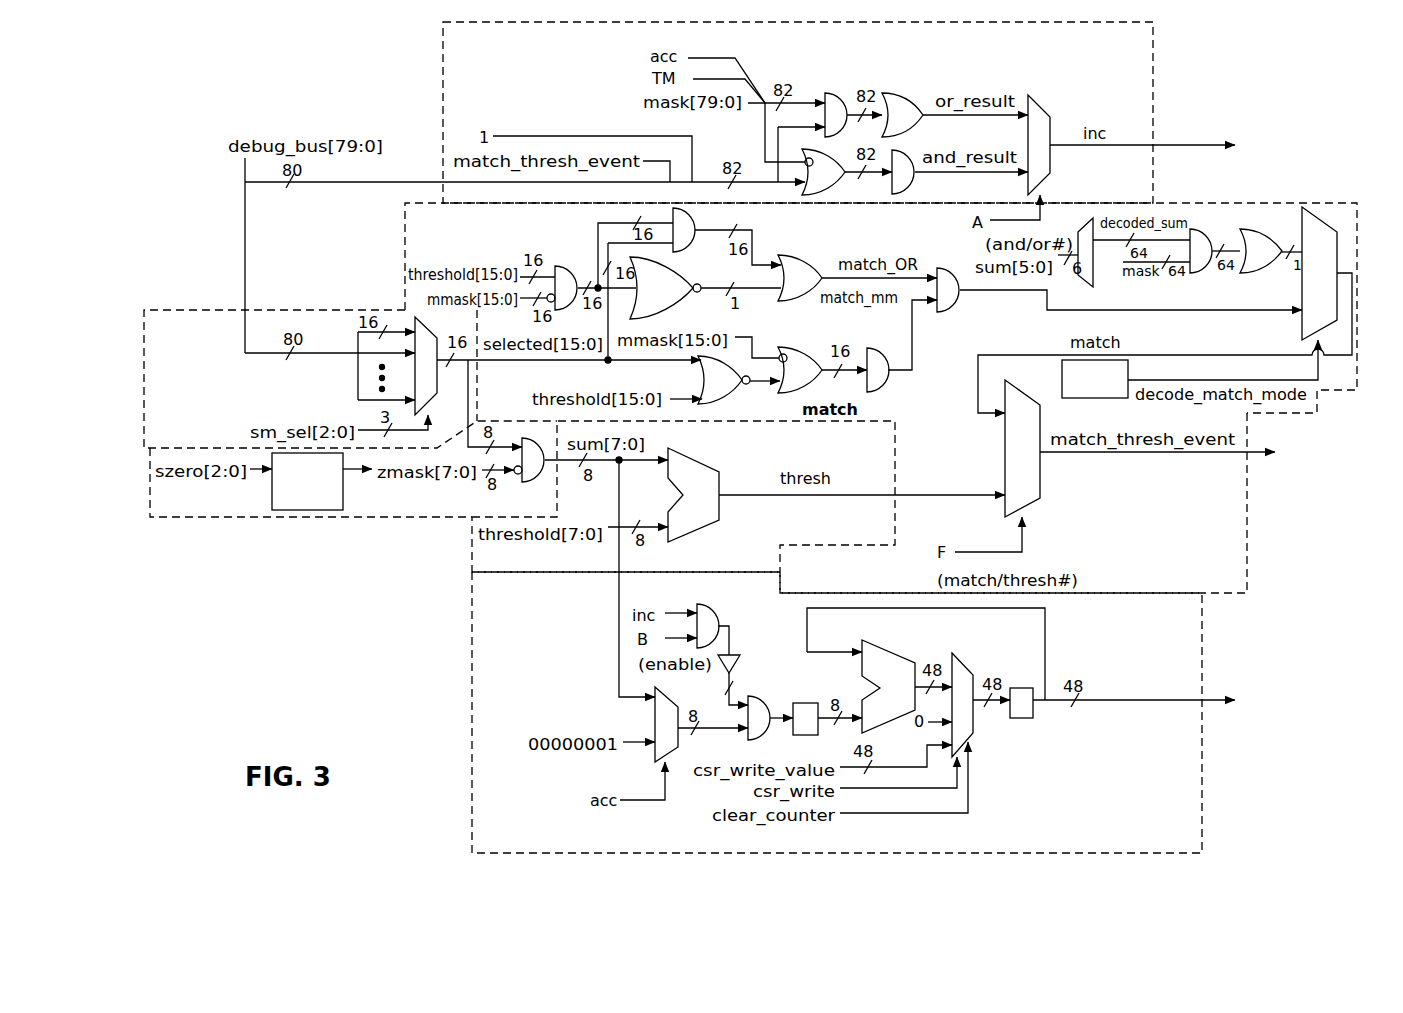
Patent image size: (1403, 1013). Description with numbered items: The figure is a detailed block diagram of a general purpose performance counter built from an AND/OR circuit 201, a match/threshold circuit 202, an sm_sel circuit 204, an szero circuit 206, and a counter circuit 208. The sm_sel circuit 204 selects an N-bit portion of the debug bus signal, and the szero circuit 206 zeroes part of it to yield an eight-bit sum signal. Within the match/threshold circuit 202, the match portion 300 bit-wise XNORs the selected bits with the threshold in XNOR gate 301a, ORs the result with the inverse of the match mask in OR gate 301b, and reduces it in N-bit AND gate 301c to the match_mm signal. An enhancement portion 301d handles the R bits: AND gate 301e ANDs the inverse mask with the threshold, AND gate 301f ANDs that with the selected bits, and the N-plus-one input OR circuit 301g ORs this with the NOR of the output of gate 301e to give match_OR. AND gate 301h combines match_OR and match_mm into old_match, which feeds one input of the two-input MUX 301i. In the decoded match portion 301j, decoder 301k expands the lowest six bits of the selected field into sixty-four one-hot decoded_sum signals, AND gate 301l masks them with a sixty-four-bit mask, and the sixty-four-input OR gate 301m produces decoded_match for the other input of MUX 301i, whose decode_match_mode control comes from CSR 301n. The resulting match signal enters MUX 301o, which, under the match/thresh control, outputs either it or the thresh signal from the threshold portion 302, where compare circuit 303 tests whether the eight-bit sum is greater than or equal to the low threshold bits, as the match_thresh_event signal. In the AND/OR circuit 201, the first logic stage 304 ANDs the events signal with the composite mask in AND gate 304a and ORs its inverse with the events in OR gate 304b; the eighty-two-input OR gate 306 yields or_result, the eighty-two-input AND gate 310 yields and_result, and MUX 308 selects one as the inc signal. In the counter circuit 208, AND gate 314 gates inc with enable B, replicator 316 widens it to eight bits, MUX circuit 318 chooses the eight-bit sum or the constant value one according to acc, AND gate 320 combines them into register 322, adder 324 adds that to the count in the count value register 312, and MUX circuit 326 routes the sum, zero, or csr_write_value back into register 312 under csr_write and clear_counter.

The AND/OR circuit 201 is at (1156, 108).
The match/threshold circuit 202 is at (1283, 565).
The sm_sel circuit 204 is at (223, 306).
The szero circuit 206 is at (263, 516).
The counter circuit 208 is at (1203, 754).
The match portion 300 is at (1163, 205).
The XNOR gate 301a is at (726, 401).
The OR gate 301b is at (802, 347).
The N-bit AND gate 301c is at (881, 387).
The enhancement portion 301d is at (943, 324).
The AND gate 301e is at (555, 267).
The AND gate 301f is at (700, 228).
The N+1 input OR circuit 301g is at (800, 257).
The AND gate 301h is at (947, 235).
The two-input MUX 301i is at (1323, 206).
The decoded match portion 301j is at (1258, 349).
The decoder 301k is at (1085, 217).
The AND gate 301l is at (1204, 228).
The 64-input OR gate 301m is at (1248, 226).
The CSR 301n is at (1062, 362).
The MUX 301o is at (1042, 477).
The threshold portion 302 is at (473, 544).
The compare circuit 303 is at (699, 462).
The first logic stage 304 is at (820, 88).
The AND gate 304a is at (828, 90).
The OR gate 304b is at (830, 185).
The 82-input OR gate 306 is at (900, 92).
The two-input MUX 308 is at (1045, 103).
The 82-input AND gate 310 is at (918, 177).
The count value register 312 is at (1018, 719).
The two-input AND gate 314 is at (706, 604).
The 8x replicator 316 is at (738, 658).
The MUX circuit 318 is at (663, 694).
The AND gate 320 is at (751, 698).
The register 322 is at (800, 701).
The adder 324 is at (881, 647).
The MUX circuit 326 is at (966, 655).